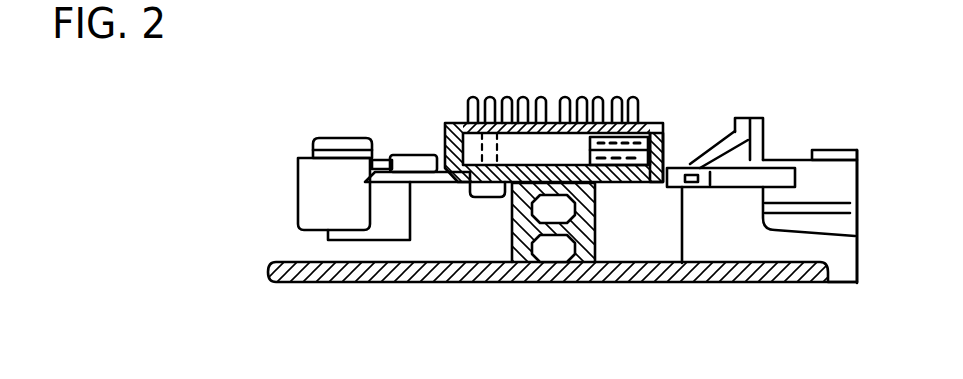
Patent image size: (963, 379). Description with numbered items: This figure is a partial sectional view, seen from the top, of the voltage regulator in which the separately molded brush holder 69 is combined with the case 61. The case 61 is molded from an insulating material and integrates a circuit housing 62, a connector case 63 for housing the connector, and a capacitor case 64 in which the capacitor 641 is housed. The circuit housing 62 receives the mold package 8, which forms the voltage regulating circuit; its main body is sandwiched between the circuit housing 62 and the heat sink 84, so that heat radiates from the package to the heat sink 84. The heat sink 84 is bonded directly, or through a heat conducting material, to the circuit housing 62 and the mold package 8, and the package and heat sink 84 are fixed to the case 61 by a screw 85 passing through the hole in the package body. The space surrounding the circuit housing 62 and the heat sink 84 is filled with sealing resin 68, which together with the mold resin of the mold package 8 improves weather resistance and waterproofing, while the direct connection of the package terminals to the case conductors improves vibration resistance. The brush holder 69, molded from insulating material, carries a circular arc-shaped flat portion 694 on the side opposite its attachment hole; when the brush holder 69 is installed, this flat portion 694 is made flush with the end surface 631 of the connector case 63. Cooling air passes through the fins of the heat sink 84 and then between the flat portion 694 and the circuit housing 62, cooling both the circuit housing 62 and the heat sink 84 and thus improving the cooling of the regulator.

The mold package 8 is at (549, 147).
The case 61 is at (680, 168).
The circuit housing 62 is at (657, 132).
The connector case 63 is at (840, 150).
The end surface 631 is at (847, 284).
The capacitor case 64 is at (298, 172).
The capacitor 641 is at (333, 138).
The sealing resin 68 is at (607, 150).
The brush holder 69 is at (598, 232).
The flat portion 694 is at (322, 282).
The heat sink 84 is at (486, 112).
The screw 85 is at (478, 197).